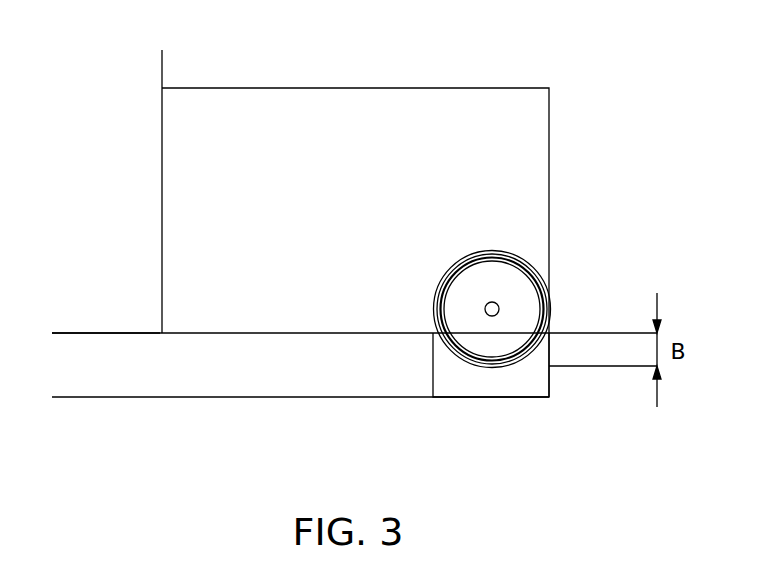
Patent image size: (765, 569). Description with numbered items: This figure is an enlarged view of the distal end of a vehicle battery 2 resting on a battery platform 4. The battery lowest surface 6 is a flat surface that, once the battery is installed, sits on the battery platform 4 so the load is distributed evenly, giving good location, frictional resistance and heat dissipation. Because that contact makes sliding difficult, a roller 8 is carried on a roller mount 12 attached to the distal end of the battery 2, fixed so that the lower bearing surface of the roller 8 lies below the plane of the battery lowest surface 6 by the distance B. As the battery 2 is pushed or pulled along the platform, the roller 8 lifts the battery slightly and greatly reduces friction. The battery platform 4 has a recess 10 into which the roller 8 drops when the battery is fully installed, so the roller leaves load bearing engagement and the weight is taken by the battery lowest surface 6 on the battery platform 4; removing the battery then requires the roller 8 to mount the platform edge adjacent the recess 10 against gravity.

The battery 2 is at (162, 70).
The battery platform 4 is at (322, 371).
The battery lowest surface 6 is at (94, 335).
The roller 8 is at (546, 297).
The recess 10 is at (497, 397).
The roller mount 12 is at (463, 88).